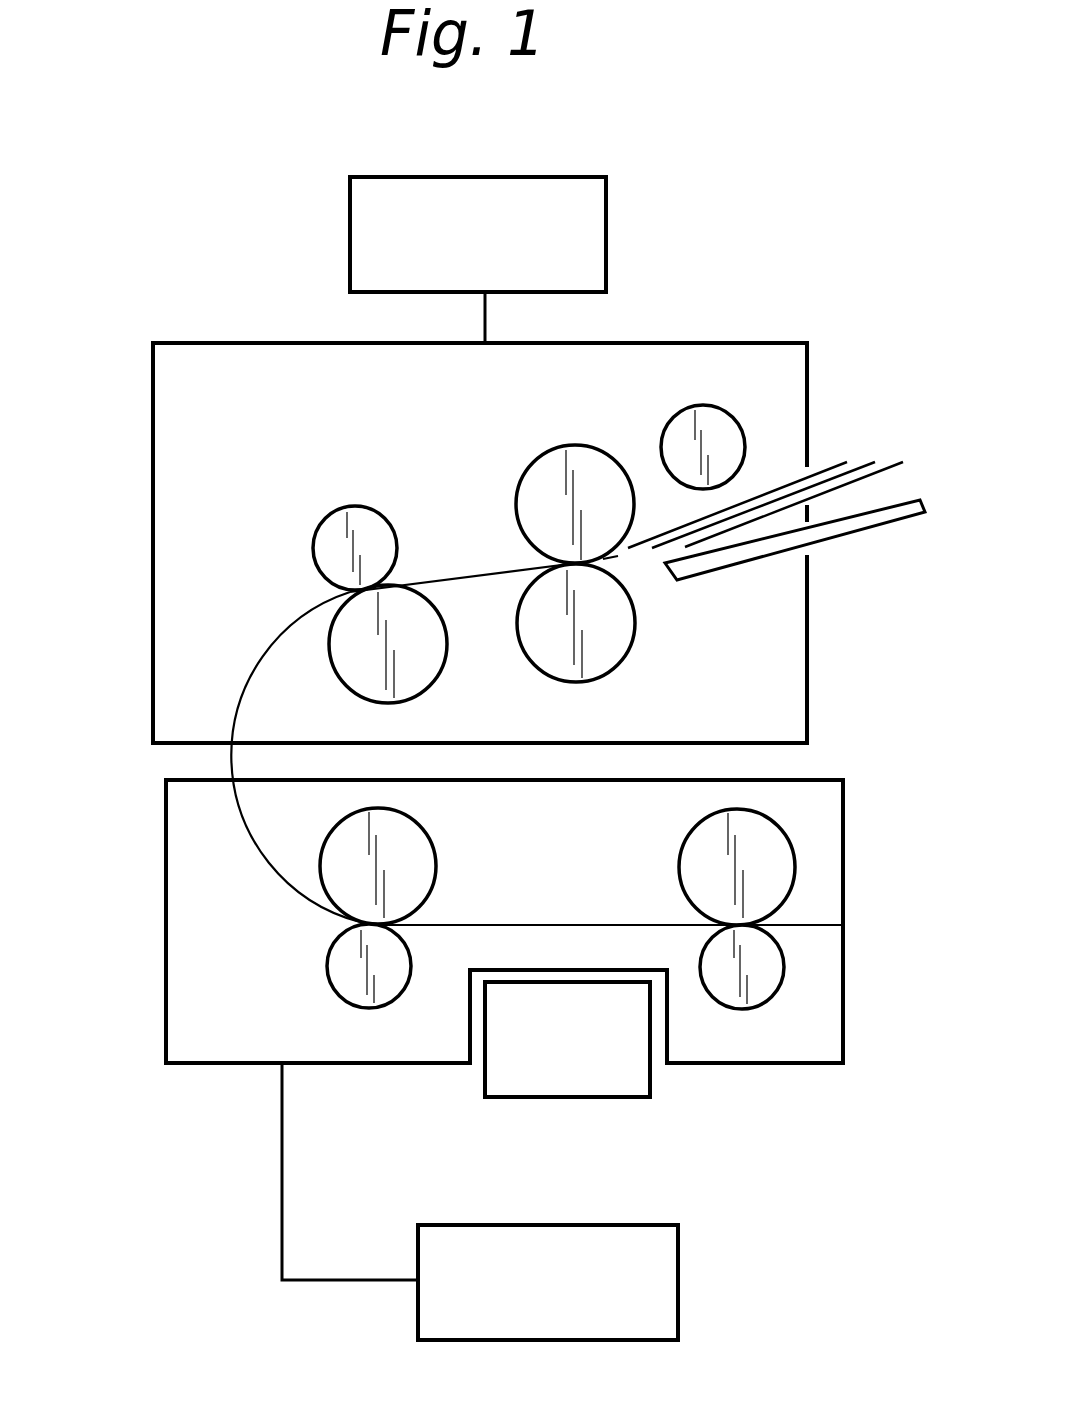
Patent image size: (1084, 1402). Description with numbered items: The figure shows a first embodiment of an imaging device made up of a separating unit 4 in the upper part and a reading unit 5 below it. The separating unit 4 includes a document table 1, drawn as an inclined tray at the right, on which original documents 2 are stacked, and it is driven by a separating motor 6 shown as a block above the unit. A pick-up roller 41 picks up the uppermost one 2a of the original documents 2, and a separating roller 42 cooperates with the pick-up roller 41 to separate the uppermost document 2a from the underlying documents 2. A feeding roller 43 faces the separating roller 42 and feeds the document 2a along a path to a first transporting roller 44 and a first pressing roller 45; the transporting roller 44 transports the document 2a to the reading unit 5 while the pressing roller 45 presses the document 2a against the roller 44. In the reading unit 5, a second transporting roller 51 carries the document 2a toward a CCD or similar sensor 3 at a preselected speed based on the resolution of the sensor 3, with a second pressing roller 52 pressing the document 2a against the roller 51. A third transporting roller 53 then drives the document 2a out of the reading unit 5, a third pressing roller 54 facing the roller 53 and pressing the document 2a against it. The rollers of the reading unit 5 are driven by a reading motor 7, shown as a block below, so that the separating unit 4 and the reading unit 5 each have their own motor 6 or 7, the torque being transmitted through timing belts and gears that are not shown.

The document table 1 is at (925, 496).
The original documents 2 is at (876, 460).
The uppermost document 2a is at (830, 463).
The sensor 3 is at (563, 1097).
The separating unit 4 is at (213, 343).
The reading unit 5 is at (166, 1022).
The separating motor 6 is at (606, 240).
The reading motor 7 is at (528, 1225).
The pick-up roller 41 is at (720, 440).
The separating roller 42 is at (618, 650).
The feeding roller 43 is at (607, 482).
The first transporting roller 44 is at (430, 658).
The first pressing roller 45 is at (385, 546).
The second transporting roller 51 is at (420, 862).
The second pressing roller 52 is at (340, 957).
The third transporting roller 53 is at (688, 852).
The third pressing roller 54 is at (765, 972).